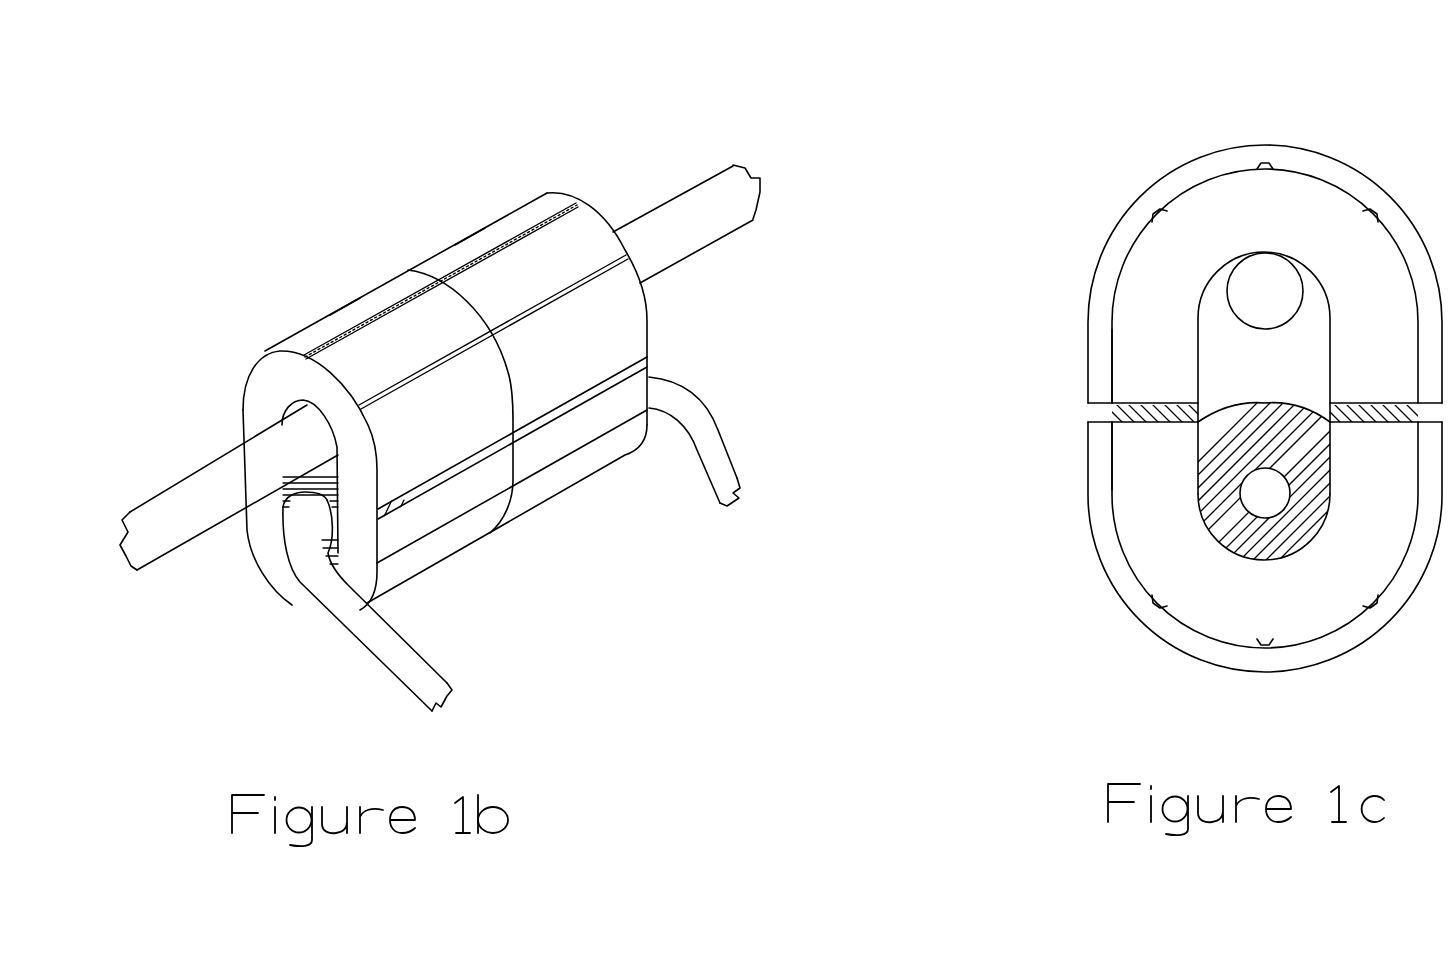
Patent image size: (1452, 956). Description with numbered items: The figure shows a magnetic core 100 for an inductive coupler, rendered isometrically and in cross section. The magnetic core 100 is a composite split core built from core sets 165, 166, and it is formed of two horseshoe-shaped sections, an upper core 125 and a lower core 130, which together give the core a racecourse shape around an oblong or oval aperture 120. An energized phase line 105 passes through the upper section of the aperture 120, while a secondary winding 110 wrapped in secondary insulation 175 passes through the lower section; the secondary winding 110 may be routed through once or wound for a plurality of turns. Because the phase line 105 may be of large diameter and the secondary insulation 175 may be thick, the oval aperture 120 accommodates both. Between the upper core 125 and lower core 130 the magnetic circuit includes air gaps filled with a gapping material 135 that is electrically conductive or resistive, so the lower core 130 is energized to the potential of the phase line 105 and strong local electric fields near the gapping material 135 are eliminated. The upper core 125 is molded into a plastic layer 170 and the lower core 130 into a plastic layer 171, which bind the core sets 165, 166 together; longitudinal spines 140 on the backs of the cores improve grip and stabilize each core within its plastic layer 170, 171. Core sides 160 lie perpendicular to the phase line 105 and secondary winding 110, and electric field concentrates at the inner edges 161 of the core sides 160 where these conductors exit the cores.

In FIG. 1B, the magnetic core 100 is at (668, 322).
In FIG. 1C, the magnetic core 100 is at (1066, 346).
In FIG. 1B, the energized phase line 105 is at (718, 161).
In FIG. 1C, the energized phase line 105 is at (1223, 281).
In FIG. 1B, the secondary winding 110 is at (741, 472).
In FIG. 1C, the secondary winding 110 is at (1235, 503).
In FIG. 1C, the aperture 120 is at (1233, 347).
In FIG. 1B, the upper core 125 is at (457, 239).
In FIG. 1C, the upper core 125 is at (1104, 298).
In FIG. 1B, the lower core 130 is at (532, 512).
In FIG. 1C, the lower core 130 is at (1106, 487).
In FIG. 1B, the gapping material 135 is at (653, 361).
In FIG. 1C, the gapping material 135 is at (1106, 410).
In FIG. 1B, the longitudinal spines 140 is at (549, 224).
In FIG. 1C, the longitudinal spines 140 is at (877, 62).
In FIG. 1B, the core sides 160 is at (262, 374).
In FIG. 1B, the inner edges 161 is at (281, 405).
In FIG. 1B, the core set 165 is at (344, 276).
In FIG. 1B, the core set 166 is at (471, 207).
In FIG. 1C, the plastic layer 170 is at (1298, 146).
In FIG. 1C, the plastic layer 171 is at (1311, 668).
In FIG. 1B, the secondary insulation 175 is at (301, 494).
In FIG. 1C, the secondary insulation 175 is at (1208, 543).